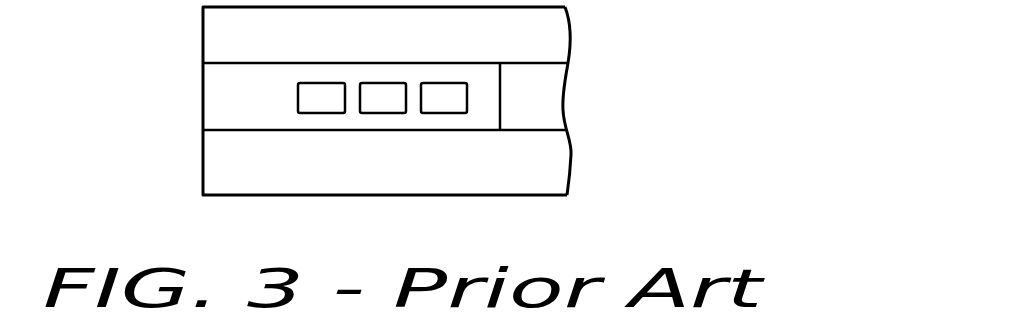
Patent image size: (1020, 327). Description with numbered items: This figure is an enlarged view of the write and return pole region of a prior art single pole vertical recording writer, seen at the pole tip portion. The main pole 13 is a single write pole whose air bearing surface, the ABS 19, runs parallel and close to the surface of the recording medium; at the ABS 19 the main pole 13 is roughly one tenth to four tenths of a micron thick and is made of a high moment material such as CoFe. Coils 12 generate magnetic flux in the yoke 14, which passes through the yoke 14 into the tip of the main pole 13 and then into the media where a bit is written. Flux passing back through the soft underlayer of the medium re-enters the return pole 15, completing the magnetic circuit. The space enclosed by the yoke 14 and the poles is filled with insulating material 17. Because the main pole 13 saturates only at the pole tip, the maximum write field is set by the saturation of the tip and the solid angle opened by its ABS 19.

The ABS 19 is at (192, 30).
The main pole 13 is at (530, 27).
The yoke 14 is at (527, 89).
The return pole 15 is at (527, 161).
The insulating material 17 is at (226, 96).
The coils 12 is at (320, 102).